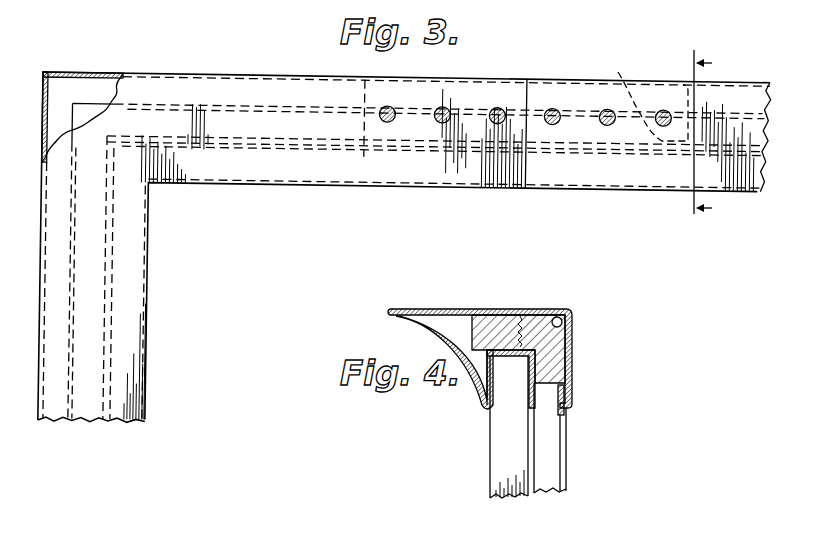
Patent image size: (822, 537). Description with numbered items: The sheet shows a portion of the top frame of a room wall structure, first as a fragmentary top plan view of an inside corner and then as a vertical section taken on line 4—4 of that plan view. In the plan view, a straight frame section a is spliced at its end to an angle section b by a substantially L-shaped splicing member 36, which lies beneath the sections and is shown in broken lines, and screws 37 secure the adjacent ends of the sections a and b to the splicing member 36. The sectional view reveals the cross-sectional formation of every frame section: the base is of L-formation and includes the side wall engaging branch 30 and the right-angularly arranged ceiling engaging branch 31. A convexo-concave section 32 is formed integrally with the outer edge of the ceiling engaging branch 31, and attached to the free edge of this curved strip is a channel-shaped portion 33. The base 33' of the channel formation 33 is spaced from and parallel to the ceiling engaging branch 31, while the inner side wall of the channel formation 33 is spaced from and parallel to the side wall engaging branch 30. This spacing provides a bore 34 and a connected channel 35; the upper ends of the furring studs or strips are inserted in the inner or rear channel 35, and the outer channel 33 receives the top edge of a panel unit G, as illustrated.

In FIG. 4, the side wall engaging branch 30 is at (575, 356).
In FIG. 4, the ceiling engaging branch 31 is at (463, 309).
In FIG. 4, the convexo-concave section 32 is at (437, 337).
In FIG. 4, the channel-shaped portion 33 is at (511, 395).
In FIG. 4, the base of channel formation 33' is at (463, 391).
In FIG. 4, the bore 34 is at (574, 326).
In FIG. 4, the channel 35 is at (566, 412).
In FIG. 3, the splicing member 36 is at (652, 95).
In FIG. 4, the splicing member 36 is at (550, 378).
In FIG. 4, the screws 37 is at (522, 313).
In FIG. 3, the section line 4— 4 is at (693, 134).
In FIG. 3, the straight frame section a is at (610, 186).
In FIG. 3, the angle section b is at (231, 185).
In FIG. 4, the panel units G is at (497, 462).